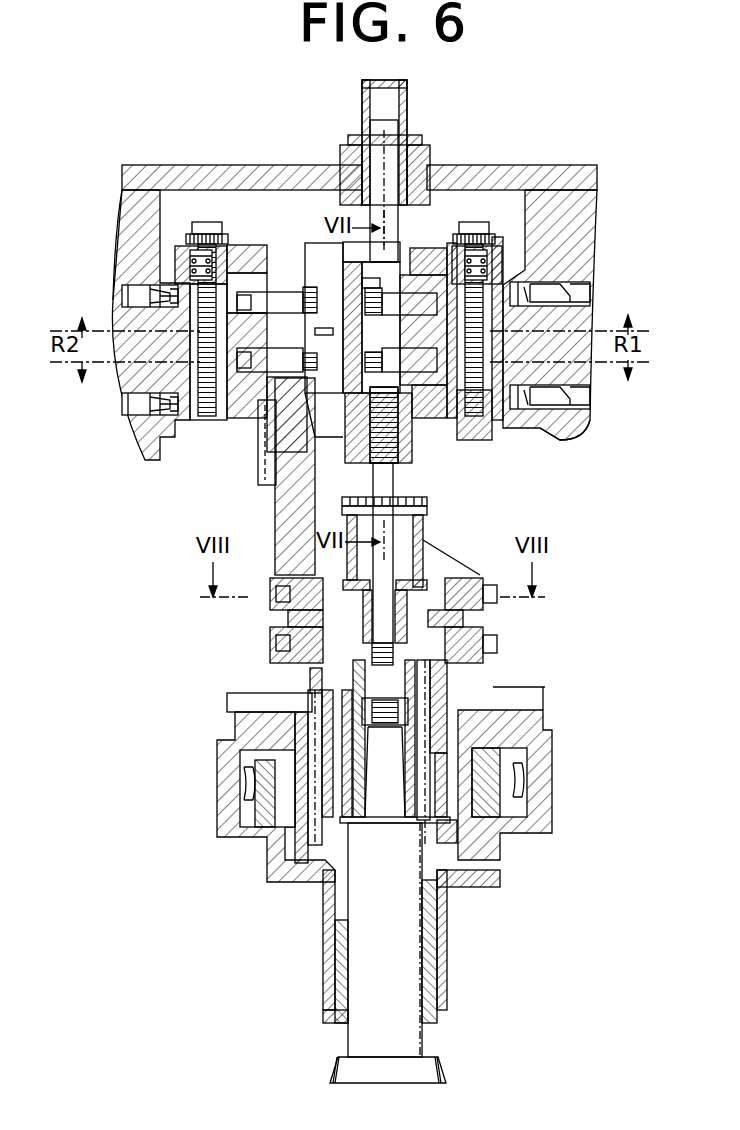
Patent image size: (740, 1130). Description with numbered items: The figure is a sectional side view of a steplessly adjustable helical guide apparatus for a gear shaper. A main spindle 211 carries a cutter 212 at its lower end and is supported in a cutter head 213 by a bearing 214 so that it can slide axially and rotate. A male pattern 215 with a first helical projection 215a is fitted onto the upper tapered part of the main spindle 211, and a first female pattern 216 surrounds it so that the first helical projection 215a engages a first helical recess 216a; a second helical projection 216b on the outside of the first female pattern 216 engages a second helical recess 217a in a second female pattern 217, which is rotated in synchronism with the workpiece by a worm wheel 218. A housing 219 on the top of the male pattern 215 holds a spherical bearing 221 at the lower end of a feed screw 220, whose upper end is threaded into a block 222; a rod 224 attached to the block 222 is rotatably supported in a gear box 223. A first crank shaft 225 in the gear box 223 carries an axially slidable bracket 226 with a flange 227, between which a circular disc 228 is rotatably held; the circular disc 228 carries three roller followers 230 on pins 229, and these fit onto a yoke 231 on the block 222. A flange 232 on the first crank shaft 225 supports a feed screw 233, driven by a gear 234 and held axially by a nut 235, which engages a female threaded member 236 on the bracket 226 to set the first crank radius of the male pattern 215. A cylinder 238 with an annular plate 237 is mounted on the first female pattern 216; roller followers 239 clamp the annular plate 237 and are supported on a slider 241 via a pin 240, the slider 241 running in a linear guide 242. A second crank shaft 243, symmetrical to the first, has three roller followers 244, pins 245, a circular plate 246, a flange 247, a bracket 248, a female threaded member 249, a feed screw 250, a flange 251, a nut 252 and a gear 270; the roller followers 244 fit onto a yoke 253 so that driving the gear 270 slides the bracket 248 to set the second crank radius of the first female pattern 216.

The main spindle 211 is at (362, 1036).
The cutter 212 is at (332, 1072).
The cutter head 213 is at (333, 952).
The bearing 214 is at (325, 1014).
The male pattern 215 is at (325, 885).
The first helical projection 215a is at (425, 680).
The first female pattern 216 is at (300, 830).
The first helical recess 216a is at (425, 790).
The second helical projection 216b is at (450, 830).
The second female pattern 217 is at (285, 722).
The second helical recess 217a is at (470, 732).
The worm wheel 218 is at (245, 787).
The housing 219 is at (312, 672).
The feed screw 220 is at (424, 510).
The spherical bearing 221 is at (362, 615).
The block 222 is at (262, 488).
The gear box 223 is at (486, 172).
The rod 224 is at (375, 124).
The first crank shaft 225 is at (585, 322).
The bracket 226 is at (420, 445).
The flange 227 is at (410, 418).
The circular disc 228 is at (455, 415).
The pins 229 is at (560, 440).
The roller followers 230 is at (530, 382).
The yoke 231 is at (340, 305).
The flange 232 is at (505, 255).
The feed screw 233 is at (520, 290).
The gear 234 is at (488, 225).
The nut 235 is at (488, 262).
The female threaded member 236 is at (485, 440).
The annular plate 237 is at (485, 615).
The cylinder 238 is at (312, 685).
The roller followers 239 is at (292, 580).
The pin 240 is at (290, 615).
The slider 241 is at (300, 512).
The linear guide 242 is at (290, 535).
The second crank shaft 243 is at (128, 292).
The roller followers 244 is at (165, 408).
The pins 245 is at (190, 370).
The circular plate 246 is at (260, 440).
The flange 247 is at (250, 418).
The bracket 248 is at (235, 420).
The female threaded member 249 is at (165, 322).
The feed screw 250 is at (192, 268).
The flange 251 is at (178, 250).
The nut 252 is at (150, 213).
The yoke 253 is at (308, 300).
The gear 270 is at (205, 225).